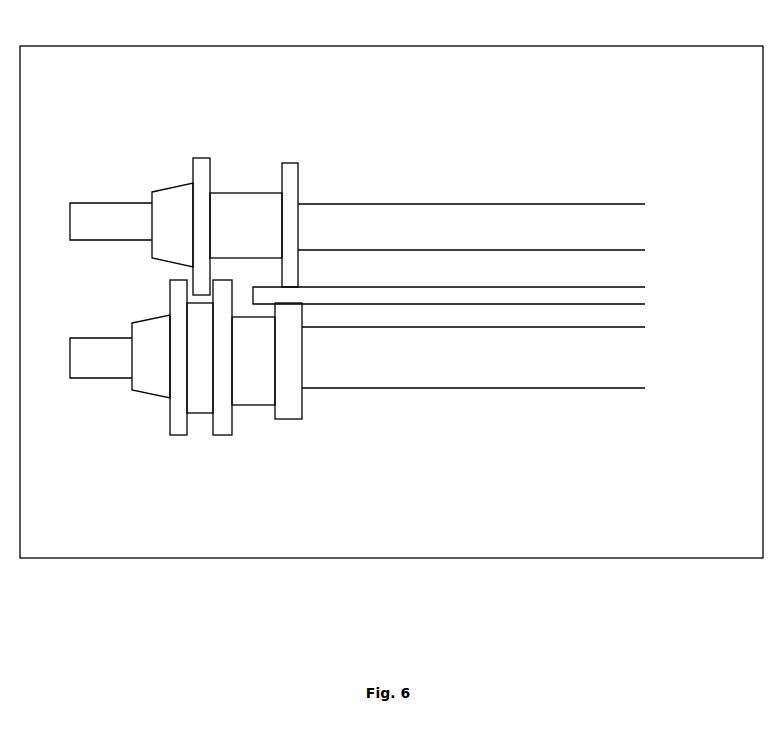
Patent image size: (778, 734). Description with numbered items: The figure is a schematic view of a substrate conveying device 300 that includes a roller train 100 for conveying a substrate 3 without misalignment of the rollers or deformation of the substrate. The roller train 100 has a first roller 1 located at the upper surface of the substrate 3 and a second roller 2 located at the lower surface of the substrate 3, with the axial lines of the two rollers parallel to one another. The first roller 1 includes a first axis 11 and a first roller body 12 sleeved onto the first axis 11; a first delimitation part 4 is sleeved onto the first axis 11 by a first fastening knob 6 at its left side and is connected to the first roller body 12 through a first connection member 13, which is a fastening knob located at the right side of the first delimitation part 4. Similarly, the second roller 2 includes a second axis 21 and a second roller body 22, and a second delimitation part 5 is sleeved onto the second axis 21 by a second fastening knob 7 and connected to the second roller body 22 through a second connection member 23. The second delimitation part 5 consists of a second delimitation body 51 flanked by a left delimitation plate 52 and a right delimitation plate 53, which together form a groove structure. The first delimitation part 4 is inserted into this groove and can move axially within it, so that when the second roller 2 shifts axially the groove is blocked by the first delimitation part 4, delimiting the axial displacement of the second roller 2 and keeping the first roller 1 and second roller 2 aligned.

The first roller 1 is at (463, 178).
The first axis 11 is at (330, 205).
The first roller body 12 is at (288, 163).
The first connection member 13 is at (237, 193).
The first delimitation part 4 is at (202, 160).
The first fastening knob 6 is at (180, 185).
The second fastening knob 7 is at (155, 398).
The second roller 2 is at (460, 415).
The second axis 21 is at (338, 388).
The second roller body 22 is at (287, 420).
The second connection member 23 is at (240, 407).
The substrate 3 is at (618, 287).
The second delimitation part 5 is at (194, 408).
The second delimitation body 51 is at (198, 413).
The left delimitation plate 52 is at (175, 435).
The right delimitation plate 53 is at (237, 385).
The roller train 100 is at (452, 185).
The substrate conveying device 300 is at (383, 558).